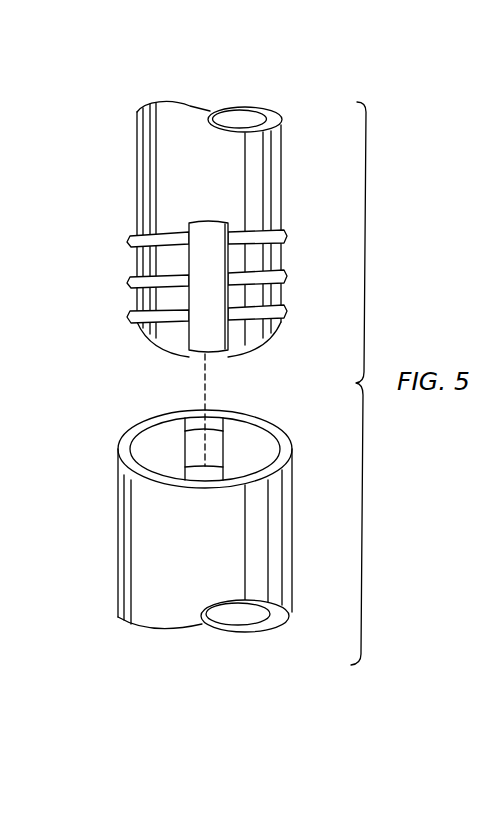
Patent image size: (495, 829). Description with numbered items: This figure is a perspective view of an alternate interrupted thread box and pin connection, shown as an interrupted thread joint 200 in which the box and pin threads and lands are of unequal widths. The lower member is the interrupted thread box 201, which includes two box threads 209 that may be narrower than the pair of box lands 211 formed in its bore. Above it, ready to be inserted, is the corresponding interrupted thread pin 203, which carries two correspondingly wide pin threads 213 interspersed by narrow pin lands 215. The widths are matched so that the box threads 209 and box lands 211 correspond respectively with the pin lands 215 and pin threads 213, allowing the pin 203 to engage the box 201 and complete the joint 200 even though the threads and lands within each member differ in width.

The interrupted thread joint 200 is at (96, 95).
The interrupted thread pin 203 is at (132, 142).
The interrupted thread box 201 is at (112, 516).
The pin threads 213 is at (284, 280).
The pin lands 215 is at (221, 298).
The box lands 211 is at (252, 443).
The box threads 209 is at (218, 475).